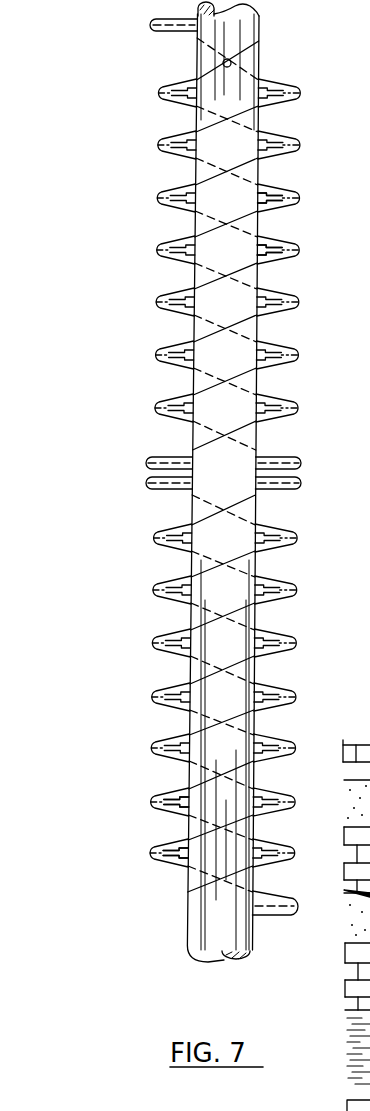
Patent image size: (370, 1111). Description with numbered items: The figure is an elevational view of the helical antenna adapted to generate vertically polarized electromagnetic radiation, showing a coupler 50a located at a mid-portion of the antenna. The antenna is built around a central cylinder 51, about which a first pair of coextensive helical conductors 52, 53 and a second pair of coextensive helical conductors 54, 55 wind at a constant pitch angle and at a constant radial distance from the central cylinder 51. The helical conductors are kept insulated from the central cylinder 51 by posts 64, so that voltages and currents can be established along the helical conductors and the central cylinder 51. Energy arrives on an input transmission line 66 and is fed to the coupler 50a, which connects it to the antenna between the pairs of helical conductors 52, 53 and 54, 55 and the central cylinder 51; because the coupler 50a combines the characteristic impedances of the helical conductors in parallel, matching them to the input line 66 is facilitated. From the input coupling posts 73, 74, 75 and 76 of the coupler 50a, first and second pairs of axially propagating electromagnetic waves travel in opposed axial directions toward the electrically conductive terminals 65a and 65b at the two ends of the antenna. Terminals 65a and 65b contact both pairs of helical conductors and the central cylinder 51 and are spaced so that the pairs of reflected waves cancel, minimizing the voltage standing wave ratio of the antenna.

The coupler 50a is at (100, 466).
The central cylinder 51 is at (195, 616).
The helical conductor 52 is at (170, 448).
The helical conductor 53 is at (160, 292).
The helical conductor 54 is at (168, 500).
The helical conductor 55 is at (153, 742).
The posts 64 is at (292, 250).
The terminal 65a is at (172, 30).
The terminal 65b is at (232, 63).
The input transmission line 66 is at (238, 11).
The input coupling post 73 is at (283, 458).
The input coupling post 74 is at (165, 455).
The input coupling post 75 is at (162, 490).
The input coupling post 76 is at (280, 490).